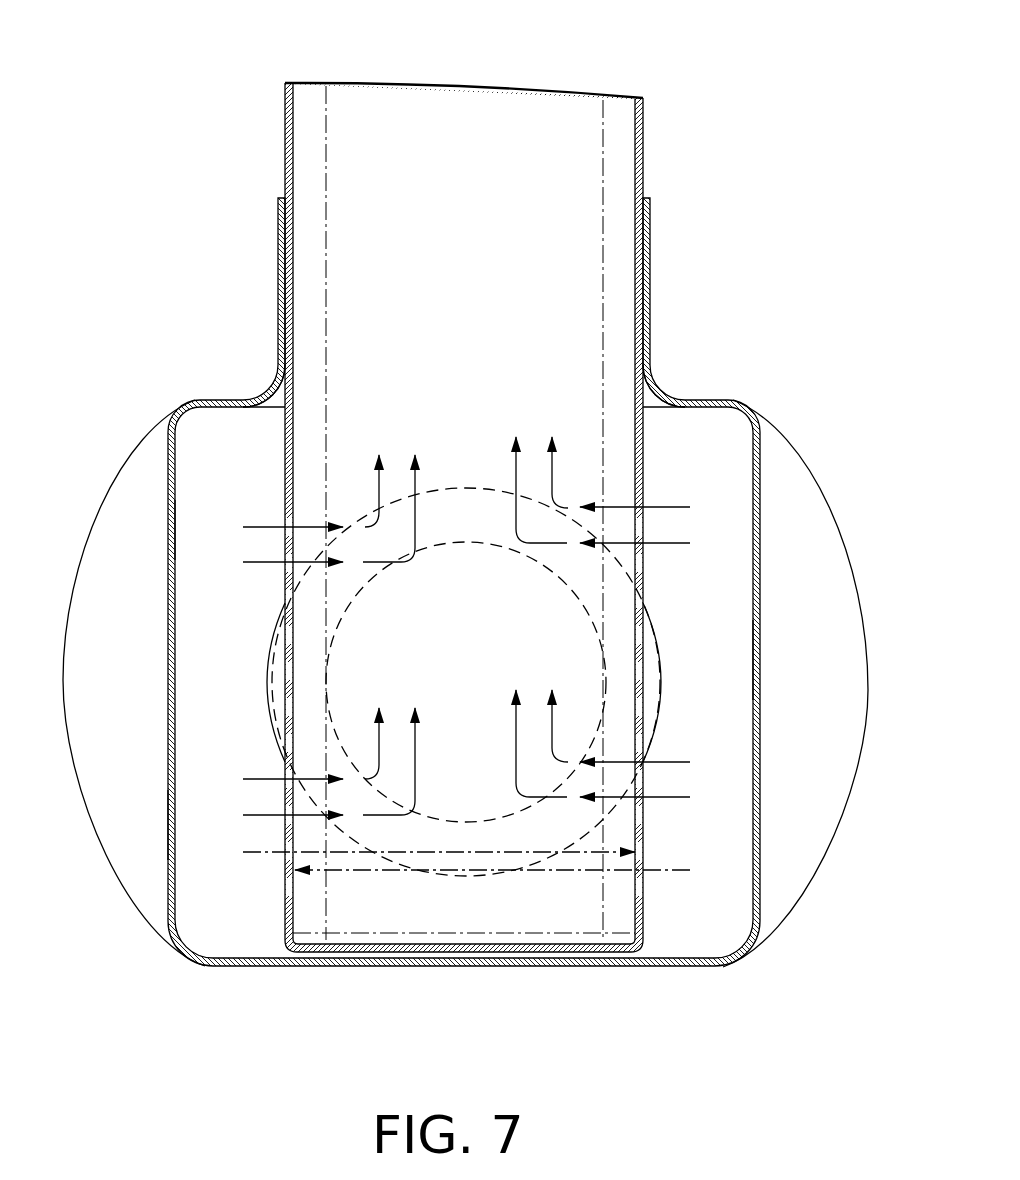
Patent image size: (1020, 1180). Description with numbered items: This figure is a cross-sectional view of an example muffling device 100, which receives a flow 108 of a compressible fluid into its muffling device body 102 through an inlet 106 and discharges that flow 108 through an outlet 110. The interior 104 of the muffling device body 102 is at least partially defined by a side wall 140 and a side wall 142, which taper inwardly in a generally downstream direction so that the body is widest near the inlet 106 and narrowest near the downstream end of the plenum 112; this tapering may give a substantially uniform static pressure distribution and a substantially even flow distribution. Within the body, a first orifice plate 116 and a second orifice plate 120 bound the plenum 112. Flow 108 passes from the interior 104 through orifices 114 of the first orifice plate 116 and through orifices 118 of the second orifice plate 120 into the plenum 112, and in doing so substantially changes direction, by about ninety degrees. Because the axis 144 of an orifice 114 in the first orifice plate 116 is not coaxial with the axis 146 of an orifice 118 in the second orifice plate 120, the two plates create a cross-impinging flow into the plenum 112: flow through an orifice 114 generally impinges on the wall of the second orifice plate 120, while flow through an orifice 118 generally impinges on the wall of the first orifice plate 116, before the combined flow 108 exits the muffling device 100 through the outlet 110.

The muffling device 100 is at (198, 70).
The muffling device body 102 is at (747, 422).
The interior 104 is at (242, 471).
The inlet 106 is at (517, 810).
The flow 108 is at (658, 800).
The outlet 110 is at (562, 83).
The plenum 112 is at (484, 323).
The orifice 114 is at (643, 876).
The first orifice plate 116 is at (645, 447).
The orifice 118 is at (287, 858).
The second orifice plate 120 is at (283, 440).
The side wall 140 is at (760, 487).
The side wall 142 is at (167, 822).
The axis 144 is at (355, 872).
The axis 146 is at (485, 852).